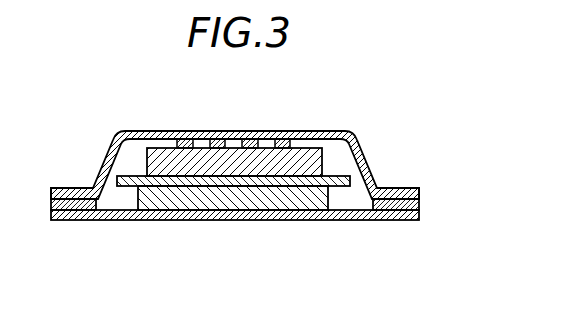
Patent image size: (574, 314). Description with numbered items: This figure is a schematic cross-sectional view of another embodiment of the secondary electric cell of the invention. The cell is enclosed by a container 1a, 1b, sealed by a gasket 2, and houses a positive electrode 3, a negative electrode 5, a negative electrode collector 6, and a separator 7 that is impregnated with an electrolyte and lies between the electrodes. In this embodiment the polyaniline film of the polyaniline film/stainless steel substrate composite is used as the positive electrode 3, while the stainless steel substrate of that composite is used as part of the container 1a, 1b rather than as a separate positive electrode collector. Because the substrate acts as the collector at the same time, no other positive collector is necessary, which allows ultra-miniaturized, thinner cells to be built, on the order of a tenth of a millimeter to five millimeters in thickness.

The container 1a is at (120, 219).
The container 1b is at (157, 131).
The gasket 2 is at (420, 203).
The positive electrode 3 is at (250, 203).
The negative electrode 5 is at (310, 153).
The negative electrode collector 6 is at (217, 143).
The separator 7 is at (348, 176).